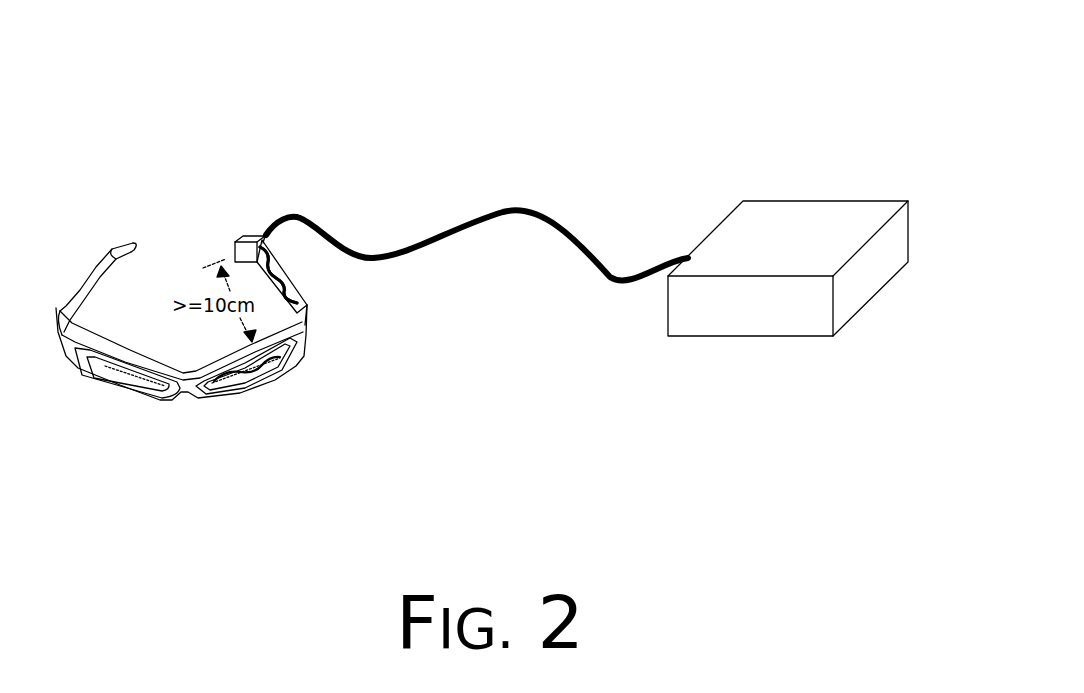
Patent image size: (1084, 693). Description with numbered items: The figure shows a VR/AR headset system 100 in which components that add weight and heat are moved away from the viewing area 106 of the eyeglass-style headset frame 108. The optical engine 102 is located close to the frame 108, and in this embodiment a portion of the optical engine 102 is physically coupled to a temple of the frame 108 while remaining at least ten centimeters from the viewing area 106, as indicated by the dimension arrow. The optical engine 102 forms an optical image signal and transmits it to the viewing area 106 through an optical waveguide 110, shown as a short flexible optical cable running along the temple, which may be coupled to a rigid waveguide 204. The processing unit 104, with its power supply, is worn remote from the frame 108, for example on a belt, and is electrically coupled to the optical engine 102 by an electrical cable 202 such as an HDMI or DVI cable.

The VR/AR headset system 100 is at (835, 54).
The optical engine 102 is at (238, 240).
The processing unit 104 is at (867, 200).
The viewing area 106 is at (292, 408).
The headset frame 108 is at (112, 243).
The optical waveguide 110 is at (297, 292).
The electrical cable 202 is at (505, 205).
The rigid waveguide 204 is at (337, 286).